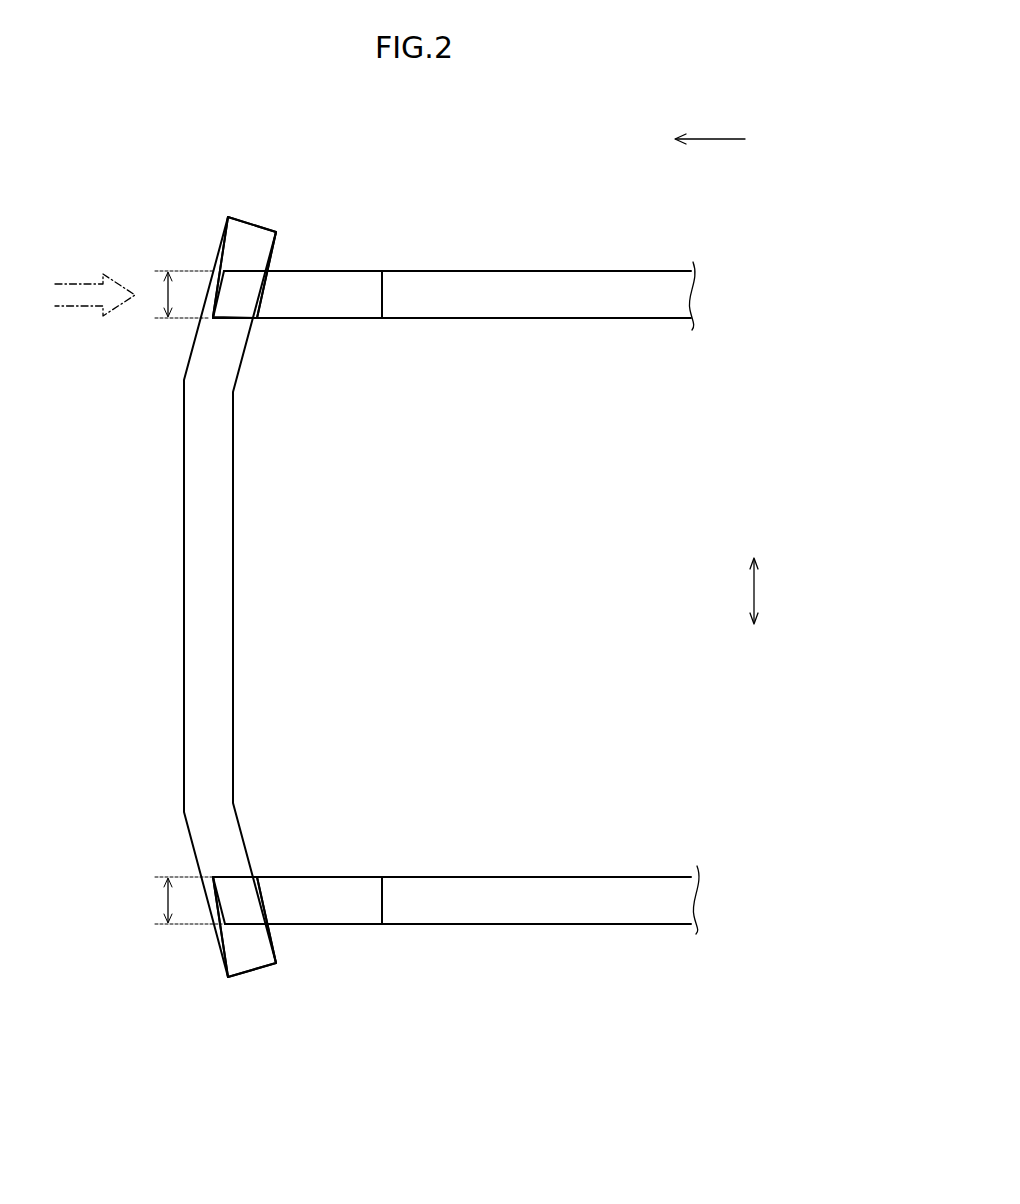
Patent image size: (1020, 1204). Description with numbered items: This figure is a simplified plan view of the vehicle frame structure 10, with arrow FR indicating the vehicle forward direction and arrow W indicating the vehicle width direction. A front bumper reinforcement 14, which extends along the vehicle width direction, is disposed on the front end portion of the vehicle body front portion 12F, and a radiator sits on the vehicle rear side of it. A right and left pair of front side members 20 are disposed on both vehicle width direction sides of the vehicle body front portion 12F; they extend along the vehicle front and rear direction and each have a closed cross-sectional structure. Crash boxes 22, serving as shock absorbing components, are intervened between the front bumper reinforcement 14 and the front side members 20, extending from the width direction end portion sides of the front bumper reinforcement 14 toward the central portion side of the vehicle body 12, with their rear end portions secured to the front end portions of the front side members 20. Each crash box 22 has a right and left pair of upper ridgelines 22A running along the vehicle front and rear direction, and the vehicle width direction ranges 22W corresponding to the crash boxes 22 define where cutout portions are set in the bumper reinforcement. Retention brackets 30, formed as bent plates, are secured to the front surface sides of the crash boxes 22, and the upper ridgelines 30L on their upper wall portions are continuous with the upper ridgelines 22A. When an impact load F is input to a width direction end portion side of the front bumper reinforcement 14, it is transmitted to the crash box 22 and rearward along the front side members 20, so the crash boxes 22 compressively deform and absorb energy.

The vehicle frame structure 10 is at (507, 232).
The vehicle body 12 is at (609, 164).
The vehicle body front portion 12F is at (563, 202).
The front bumper reinforcement 14 is at (156, 602).
The front side members 20 is at (516, 334).
The crash boxes 22 is at (355, 322).
The upper ridgelines 22A is at (326, 270).
The vehicle width direction ranges 22W is at (166, 292).
The retention brackets 30 is at (240, 283).
The upper ridgelines 30L is at (255, 276).
The impact load F is at (72, 281).
The arrow FR is at (708, 141).
The arrow W is at (757, 592).